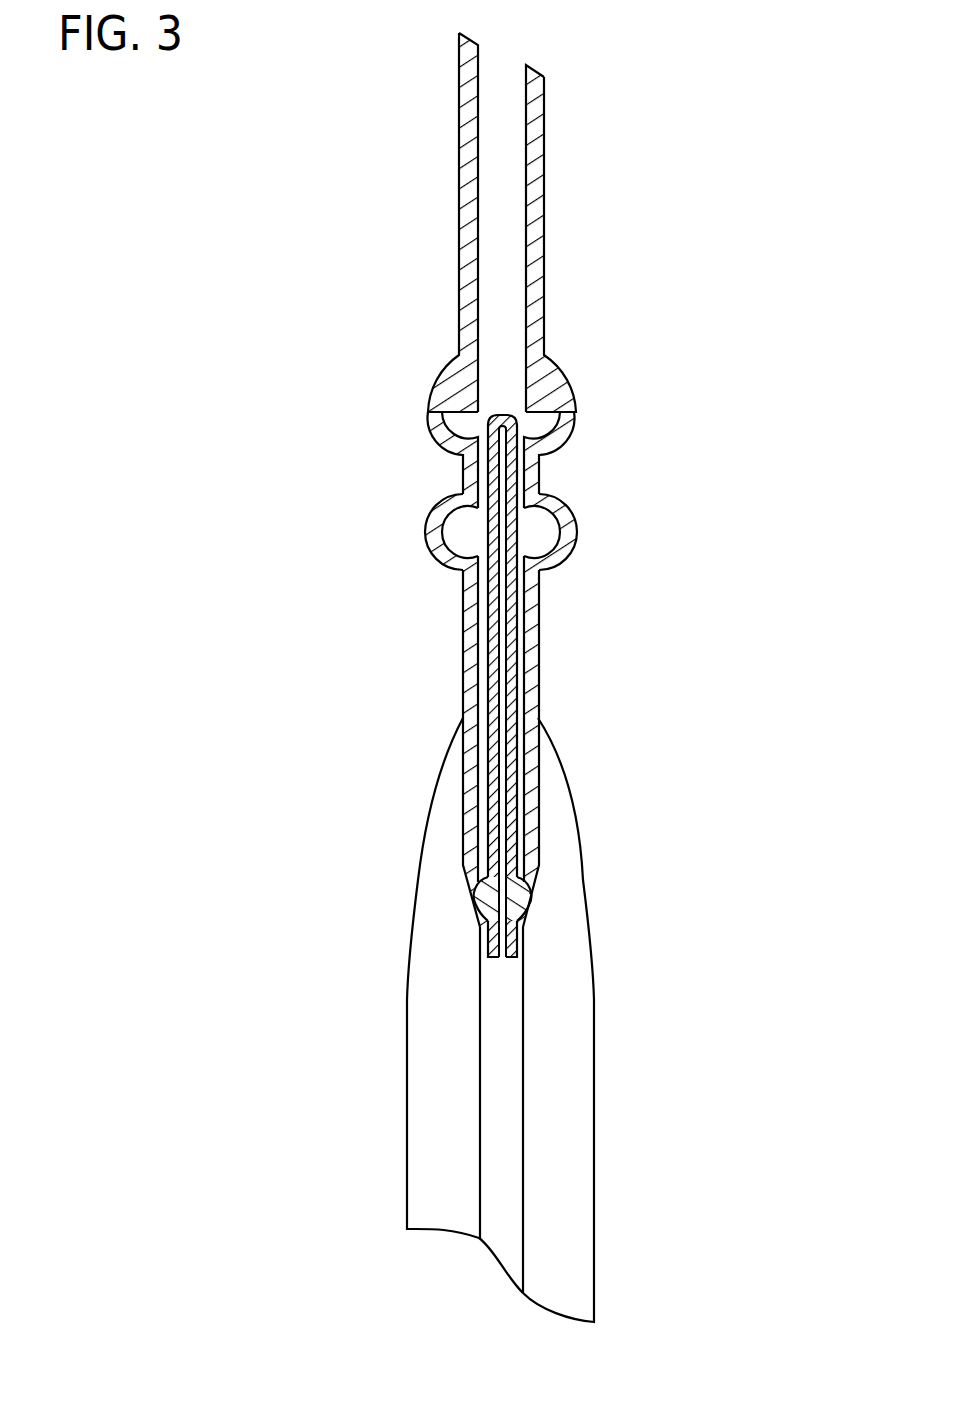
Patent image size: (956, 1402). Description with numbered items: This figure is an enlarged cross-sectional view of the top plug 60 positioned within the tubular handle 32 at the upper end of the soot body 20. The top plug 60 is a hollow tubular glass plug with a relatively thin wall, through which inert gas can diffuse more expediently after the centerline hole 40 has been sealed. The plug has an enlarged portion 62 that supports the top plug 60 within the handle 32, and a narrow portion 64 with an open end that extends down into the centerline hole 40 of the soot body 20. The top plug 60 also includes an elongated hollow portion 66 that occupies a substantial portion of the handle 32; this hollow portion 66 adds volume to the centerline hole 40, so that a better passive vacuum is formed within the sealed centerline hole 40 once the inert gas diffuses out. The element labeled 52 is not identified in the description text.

The soot body 20 is at (562, 1080).
The handle 32 is at (467, 692).
The centerline hole 40 is at (503, 1145).
The connector tube 52 is at (540, 197).
The top plug 60 is at (544, 528).
The enlarged portion 62 is at (513, 893).
The narrow portion 64 is at (513, 935).
The elongated hollow portion 66 is at (513, 698).